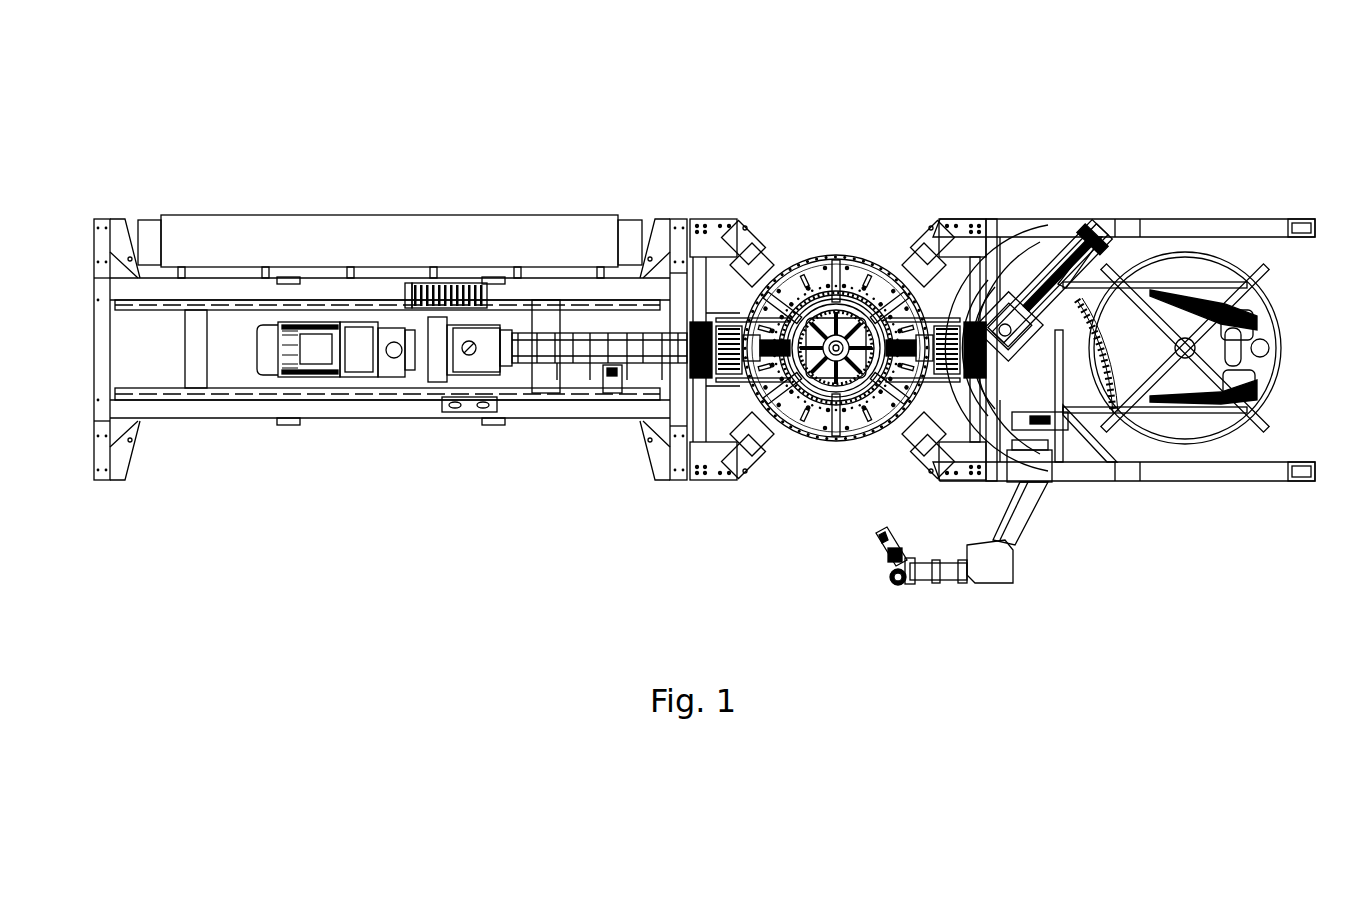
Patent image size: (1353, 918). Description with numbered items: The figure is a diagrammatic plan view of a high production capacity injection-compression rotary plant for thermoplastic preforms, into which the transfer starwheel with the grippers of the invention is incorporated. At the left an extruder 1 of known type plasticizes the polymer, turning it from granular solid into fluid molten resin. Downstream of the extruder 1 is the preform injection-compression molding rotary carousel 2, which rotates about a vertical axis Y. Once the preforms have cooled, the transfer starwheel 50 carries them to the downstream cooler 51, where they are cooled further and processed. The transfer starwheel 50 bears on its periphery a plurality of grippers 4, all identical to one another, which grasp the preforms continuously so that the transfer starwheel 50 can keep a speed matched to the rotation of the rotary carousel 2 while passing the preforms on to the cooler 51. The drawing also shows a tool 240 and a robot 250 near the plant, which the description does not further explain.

The extruder 1 is at (388, 378).
The preform injection-compression molding rotary carousel 2 is at (810, 428).
The vertical axis Y is at (824, 318).
The grippers 4 is at (940, 293).
The transfer starwheel 50 is at (1018, 250).
The cooler 51 is at (1185, 423).
The tool 240 is at (880, 558).
The robot 250 is at (1040, 583).